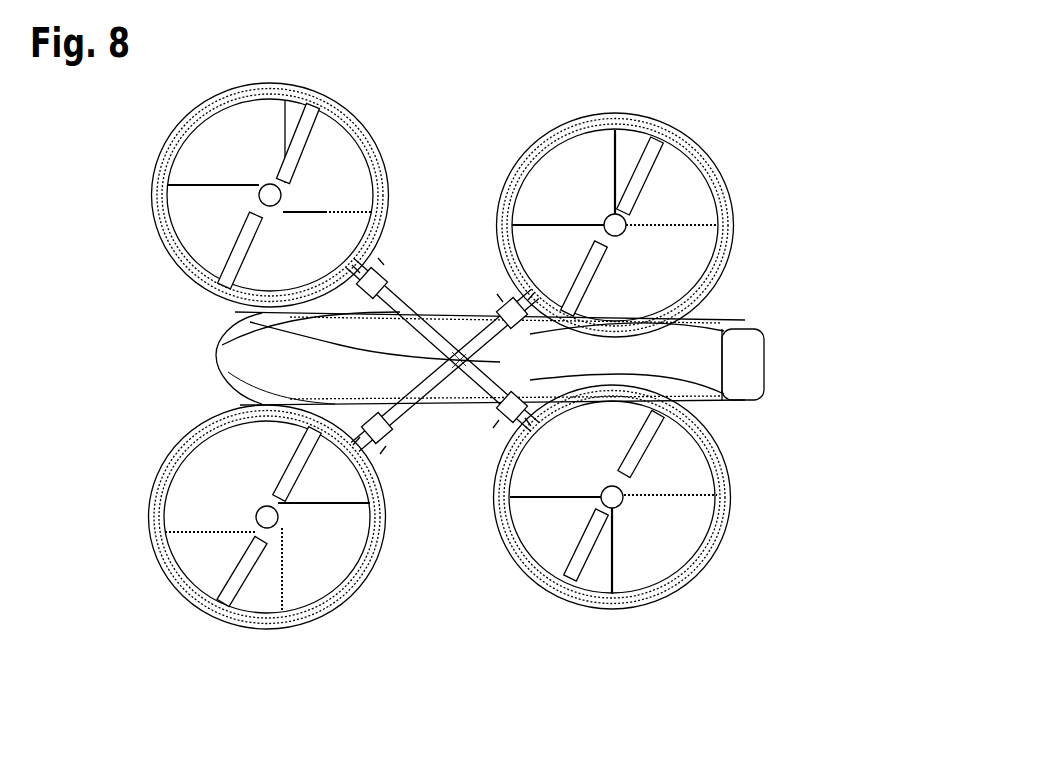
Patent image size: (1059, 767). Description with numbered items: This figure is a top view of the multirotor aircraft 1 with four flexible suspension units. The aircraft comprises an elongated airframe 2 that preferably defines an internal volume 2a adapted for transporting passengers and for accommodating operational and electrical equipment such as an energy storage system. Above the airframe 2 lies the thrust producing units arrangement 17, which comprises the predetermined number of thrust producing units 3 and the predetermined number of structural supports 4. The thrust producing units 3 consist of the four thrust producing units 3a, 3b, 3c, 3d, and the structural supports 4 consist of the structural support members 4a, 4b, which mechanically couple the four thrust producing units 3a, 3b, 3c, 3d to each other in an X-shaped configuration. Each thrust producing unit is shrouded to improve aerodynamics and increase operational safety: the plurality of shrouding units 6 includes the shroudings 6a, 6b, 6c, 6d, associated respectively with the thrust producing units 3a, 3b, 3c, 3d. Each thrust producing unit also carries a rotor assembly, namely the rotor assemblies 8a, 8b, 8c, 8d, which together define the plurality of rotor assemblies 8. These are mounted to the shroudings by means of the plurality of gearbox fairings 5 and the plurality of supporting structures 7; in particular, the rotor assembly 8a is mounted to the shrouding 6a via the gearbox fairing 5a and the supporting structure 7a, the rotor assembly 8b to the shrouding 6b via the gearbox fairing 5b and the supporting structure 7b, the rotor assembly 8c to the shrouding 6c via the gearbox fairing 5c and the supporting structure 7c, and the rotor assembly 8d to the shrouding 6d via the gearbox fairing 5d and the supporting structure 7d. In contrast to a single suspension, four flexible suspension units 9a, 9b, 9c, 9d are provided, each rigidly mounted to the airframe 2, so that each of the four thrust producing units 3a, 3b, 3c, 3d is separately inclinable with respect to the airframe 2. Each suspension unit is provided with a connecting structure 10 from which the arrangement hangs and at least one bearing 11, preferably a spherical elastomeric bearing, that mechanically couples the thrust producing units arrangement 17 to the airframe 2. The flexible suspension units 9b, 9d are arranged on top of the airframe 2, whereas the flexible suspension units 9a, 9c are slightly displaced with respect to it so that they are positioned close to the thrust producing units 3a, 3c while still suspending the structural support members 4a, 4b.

The multirotor aircraft 1 is at (652, 86).
The airframe 2 is at (252, 372).
The internal volume 2a is at (340, 346).
The thrust producing units 3 is at (701, 583).
The thrust producing unit 3a is at (164, 262).
The thrust producing unit 3b is at (690, 130).
The thrust producing unit 3c is at (150, 535).
The thrust producing unit 3d is at (721, 560).
The structural supports 4 is at (484, 358).
The structural support member 4a is at (400, 298).
The structural support member 4b is at (477, 340).
The gearbox fairings 5 is at (626, 502).
The gearbox fairing 5a is at (262, 191).
The gearbox fairing 5b is at (605, 222).
The gearbox fairing 5c is at (256, 515).
The gearbox fairing 5d is at (601, 506).
The shrouding units 6 is at (723, 505).
The shrouding 6a is at (162, 222).
The shrouding 6b is at (723, 240).
The shrouding 6c is at (358, 575).
The shrouding 6d is at (582, 592).
The supporting structures 7 is at (669, 447).
The supporting structure 7a is at (329, 150).
The supporting structure 7b is at (661, 186).
The supporting structure 7c is at (216, 565).
The supporting structure 7d is at (581, 551).
The rotor assemblies 8 is at (683, 484).
The rotor assembly 8a is at (346, 205).
The rotor assembly 8b is at (683, 220).
The rotor assembly 8c is at (292, 590).
The rotor assembly 8d is at (621, 576).
The flexible suspension unit 9a is at (373, 268).
The flexible suspension unit 9b is at (512, 298).
The flexible suspension unit 9c is at (390, 441).
The flexible suspension unit 9d is at (512, 422).
The connecting structure 10 is at (388, 281).
The bearing 11 is at (352, 306).
The thrust producing units arrangement 17 is at (149, 188).